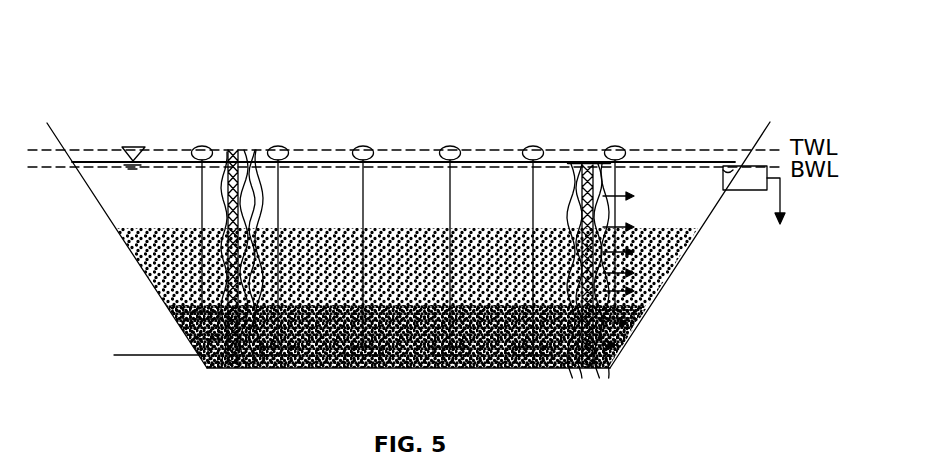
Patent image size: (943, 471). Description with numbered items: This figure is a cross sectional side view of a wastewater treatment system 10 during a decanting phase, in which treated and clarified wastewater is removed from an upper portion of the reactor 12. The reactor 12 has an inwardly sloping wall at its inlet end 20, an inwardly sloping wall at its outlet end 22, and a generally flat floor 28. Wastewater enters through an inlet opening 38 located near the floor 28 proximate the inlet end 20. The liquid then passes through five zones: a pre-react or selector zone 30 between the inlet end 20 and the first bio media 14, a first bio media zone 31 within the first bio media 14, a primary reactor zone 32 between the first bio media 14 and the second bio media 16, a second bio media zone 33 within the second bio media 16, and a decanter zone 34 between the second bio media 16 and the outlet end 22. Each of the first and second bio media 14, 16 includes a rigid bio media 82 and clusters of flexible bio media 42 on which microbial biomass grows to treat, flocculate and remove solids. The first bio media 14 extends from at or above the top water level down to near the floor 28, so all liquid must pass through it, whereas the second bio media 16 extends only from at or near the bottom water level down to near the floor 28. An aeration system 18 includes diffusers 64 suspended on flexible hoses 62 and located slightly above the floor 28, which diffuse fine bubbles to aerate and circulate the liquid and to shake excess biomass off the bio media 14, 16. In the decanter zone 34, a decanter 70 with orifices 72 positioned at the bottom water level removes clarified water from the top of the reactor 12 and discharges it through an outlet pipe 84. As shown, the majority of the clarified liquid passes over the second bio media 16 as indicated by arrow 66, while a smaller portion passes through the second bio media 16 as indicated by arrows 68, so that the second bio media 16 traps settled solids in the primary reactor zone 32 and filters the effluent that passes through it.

The wastewater treatment system 10 is at (88, 32).
The reactor 12 is at (648, 318).
The first bio media 14 is at (212, 282).
The second bio media 16 is at (550, 281).
The aeration system 18 is at (380, 326).
The inlet end 20 is at (107, 216).
The outlet end 22 is at (700, 232).
The floor 28 is at (478, 368).
The selector zone 30 is at (55, 99).
The first bio media zone 31 is at (228, 102).
The primary reactor zone 32 is at (563, 99).
The second bio media zone 33 is at (602, 106).
The decanter zone 34 is at (752, 99).
The inlet opening 38 is at (200, 357).
The flexible bio media 42 is at (232, 240).
The flexible hoses 62 is at (363, 192).
The diffusers 64 is at (363, 356).
The arrow 66 is at (588, 163).
The arrows 68 is at (612, 190).
The decanter 70 is at (740, 163).
The orifices 72 is at (722, 166).
The rigid bio media 82 is at (228, 200).
The outlet pipe 84 is at (783, 196).